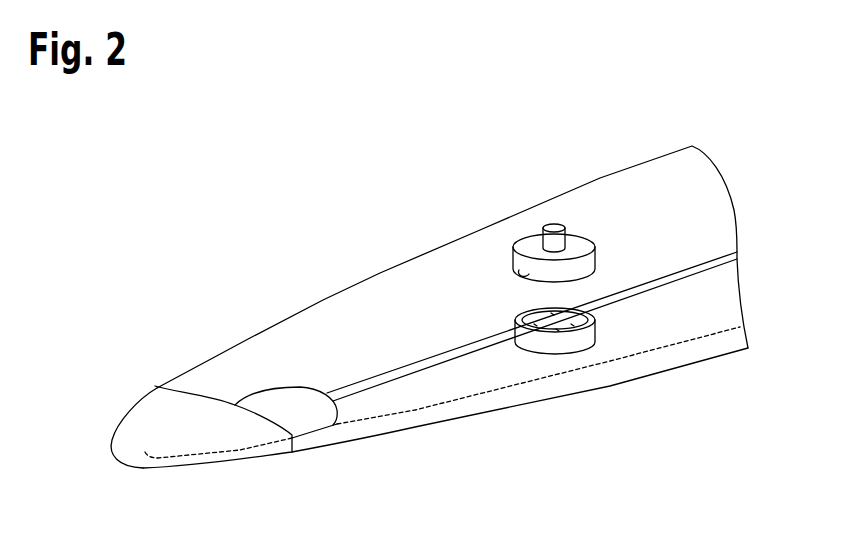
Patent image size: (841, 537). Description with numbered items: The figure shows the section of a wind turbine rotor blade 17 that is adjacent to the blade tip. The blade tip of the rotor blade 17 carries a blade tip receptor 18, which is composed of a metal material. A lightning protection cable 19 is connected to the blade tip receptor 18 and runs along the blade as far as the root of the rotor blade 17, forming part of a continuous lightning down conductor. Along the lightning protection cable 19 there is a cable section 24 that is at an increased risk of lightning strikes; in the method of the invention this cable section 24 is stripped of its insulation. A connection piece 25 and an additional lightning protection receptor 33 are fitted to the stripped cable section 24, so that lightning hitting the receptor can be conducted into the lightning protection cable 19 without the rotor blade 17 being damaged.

The rotor blade 17 is at (657, 158).
The blade tip receptor 18 is at (147, 432).
The lightning protection cable 19 is at (677, 276).
The cable section 24 is at (545, 318).
The connection piece 25 is at (603, 236).
The additional lightning protection receptor 33 is at (554, 224).